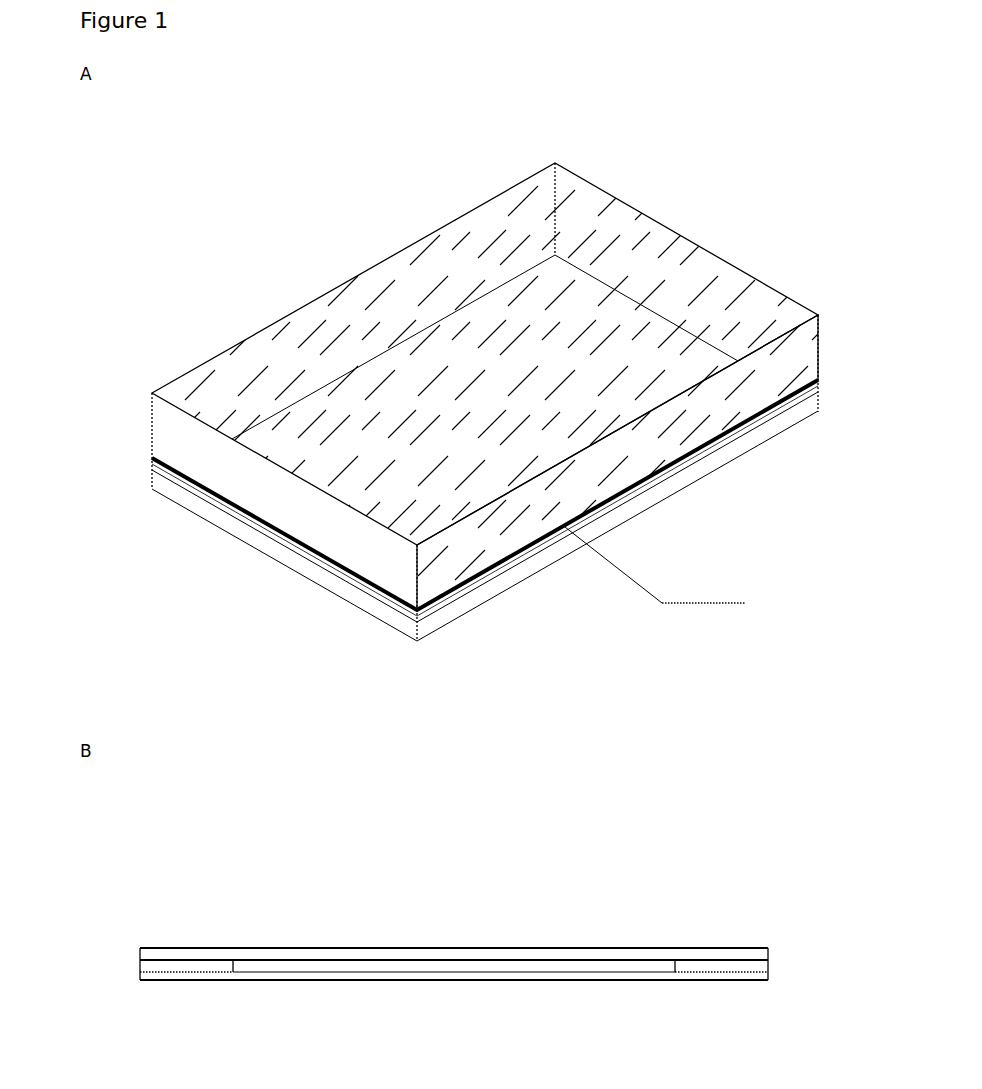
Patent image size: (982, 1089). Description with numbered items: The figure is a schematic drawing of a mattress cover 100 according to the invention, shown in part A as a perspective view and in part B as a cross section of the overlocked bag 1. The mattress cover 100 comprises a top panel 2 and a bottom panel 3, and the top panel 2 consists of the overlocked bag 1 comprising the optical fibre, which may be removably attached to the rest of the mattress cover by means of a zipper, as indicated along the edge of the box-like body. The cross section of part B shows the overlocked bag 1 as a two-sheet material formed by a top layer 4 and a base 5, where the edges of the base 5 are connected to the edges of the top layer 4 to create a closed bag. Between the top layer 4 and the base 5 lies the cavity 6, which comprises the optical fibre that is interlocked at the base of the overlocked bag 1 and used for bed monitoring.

The mattress cover 100 is at (423, 124).
The overlocked bag 1 is at (425, 265).
The top panel 2 is at (793, 350).
The bottom panel 3 is at (287, 563).
The top layer 4 is at (275, 907).
The base 5 is at (273, 977).
The cavity 6 is at (258, 965).